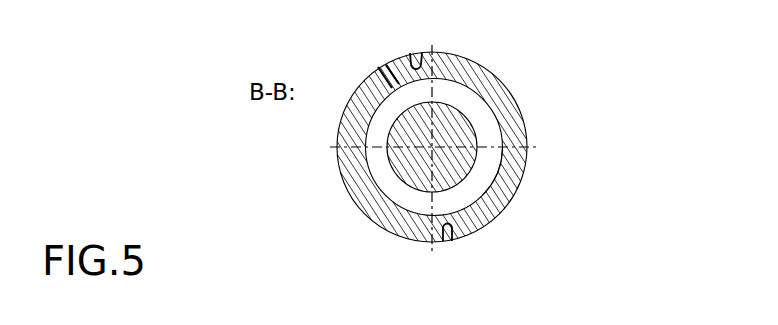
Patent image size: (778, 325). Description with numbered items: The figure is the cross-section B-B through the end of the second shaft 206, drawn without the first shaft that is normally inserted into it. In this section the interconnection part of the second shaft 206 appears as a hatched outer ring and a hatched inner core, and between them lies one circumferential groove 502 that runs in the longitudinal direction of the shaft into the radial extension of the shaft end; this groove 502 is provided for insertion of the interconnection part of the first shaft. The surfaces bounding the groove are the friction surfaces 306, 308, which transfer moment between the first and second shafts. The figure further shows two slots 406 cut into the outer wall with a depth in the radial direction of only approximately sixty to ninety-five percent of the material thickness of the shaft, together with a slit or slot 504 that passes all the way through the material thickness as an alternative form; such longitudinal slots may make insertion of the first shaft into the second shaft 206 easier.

The second shaft 206 is at (500, 84).
The friction surface 306 is at (469, 173).
The friction surface 308 is at (503, 158).
The circumferential groove 502 is at (393, 190).
The slit or slot 504 is at (380, 73).
The longitudinal slot 406 is at (413, 56).